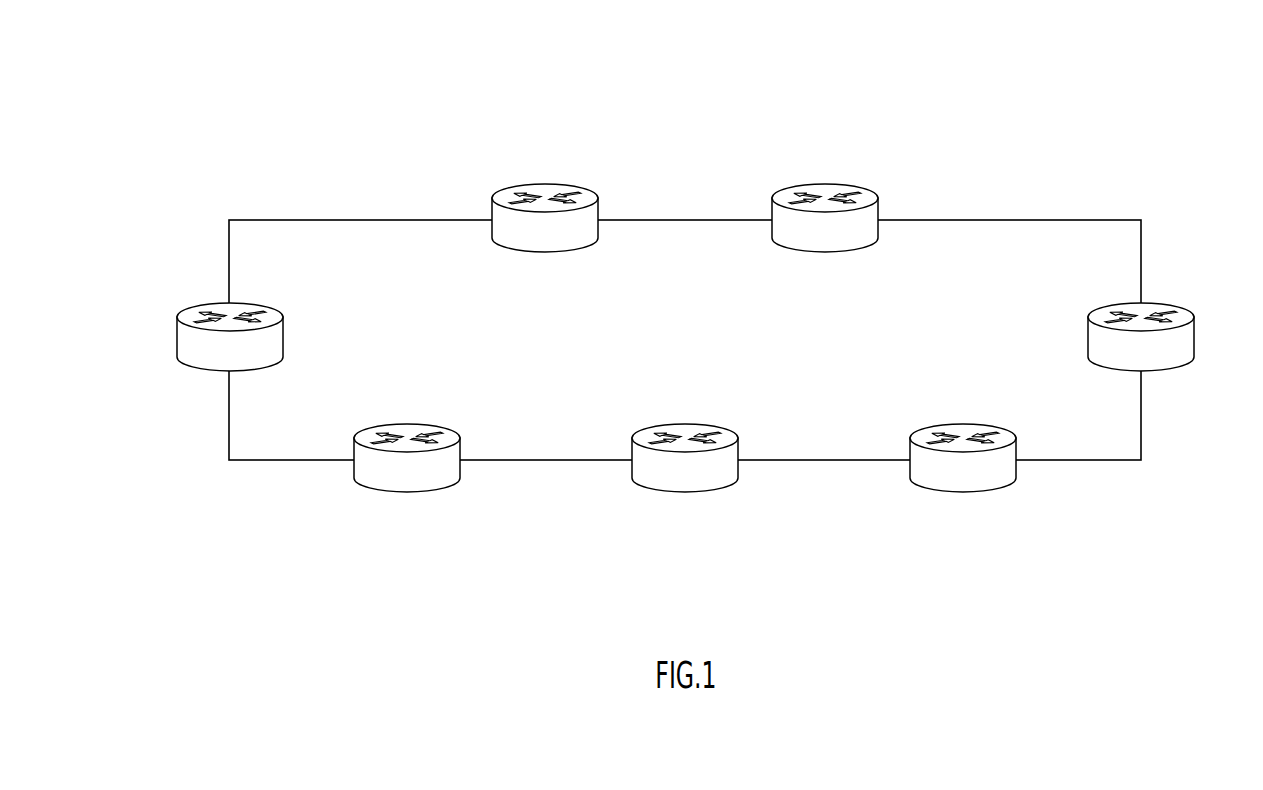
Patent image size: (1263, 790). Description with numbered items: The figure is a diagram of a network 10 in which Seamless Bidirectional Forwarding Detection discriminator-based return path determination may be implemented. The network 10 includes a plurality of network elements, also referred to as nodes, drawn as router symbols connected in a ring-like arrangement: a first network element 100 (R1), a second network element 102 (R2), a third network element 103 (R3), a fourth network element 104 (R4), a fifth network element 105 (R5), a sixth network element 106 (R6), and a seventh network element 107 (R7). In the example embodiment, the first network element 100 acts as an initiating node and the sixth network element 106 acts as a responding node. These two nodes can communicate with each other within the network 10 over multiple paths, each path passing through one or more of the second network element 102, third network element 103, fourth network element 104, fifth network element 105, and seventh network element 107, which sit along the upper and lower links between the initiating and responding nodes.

The network 10 is at (166, 109).
The first network element 100 is at (192, 372).
The second network element 102 is at (552, 183).
The third network element 103 is at (433, 495).
The fourth network element 104 is at (845, 183).
The fifth network element 105 is at (710, 495).
The sixth network element 106 is at (1198, 340).
The seventh network element 107 is at (985, 495).